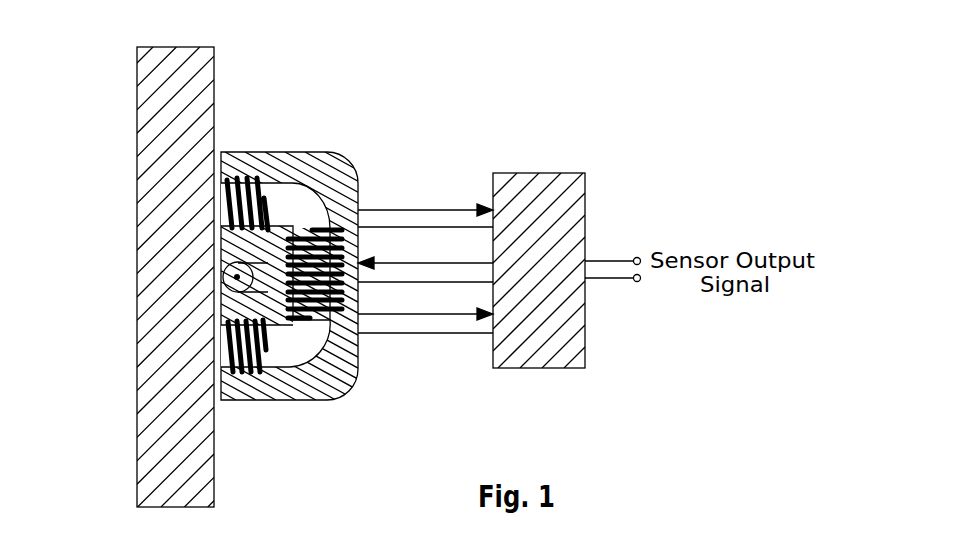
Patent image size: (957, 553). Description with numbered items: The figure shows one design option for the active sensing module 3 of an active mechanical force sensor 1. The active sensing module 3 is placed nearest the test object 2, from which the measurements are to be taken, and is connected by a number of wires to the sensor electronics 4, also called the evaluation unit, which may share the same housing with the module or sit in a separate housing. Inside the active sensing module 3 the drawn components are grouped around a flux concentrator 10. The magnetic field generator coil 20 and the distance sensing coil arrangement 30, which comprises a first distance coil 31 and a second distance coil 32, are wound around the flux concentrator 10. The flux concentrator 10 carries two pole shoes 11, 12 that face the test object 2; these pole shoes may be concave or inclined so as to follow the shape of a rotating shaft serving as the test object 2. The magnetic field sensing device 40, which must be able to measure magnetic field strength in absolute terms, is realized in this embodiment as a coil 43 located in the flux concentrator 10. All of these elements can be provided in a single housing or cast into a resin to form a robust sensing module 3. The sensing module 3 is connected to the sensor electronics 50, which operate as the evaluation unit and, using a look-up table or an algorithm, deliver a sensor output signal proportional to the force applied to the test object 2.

The active mechanical force sensor 1 is at (478, 85).
The test object 2 is at (160, 153).
The active sensing module 3 is at (403, 50).
The sensor electronics 4 is at (603, 160).
The flux concentrator 10 is at (351, 166).
The pole shoe 11 is at (293, 154).
The pole shoe 12 is at (302, 395).
The magnetic field generator coil 20 is at (336, 284).
The distance sensing coil arrangement 30 is at (302, 274).
The first distance coil 31 is at (305, 206).
The second distance coil 32 is at (278, 358).
The magnetic field sensing device 40 is at (164, 270).
The coil 43 is at (226, 264).
The sensor electronics 50 is at (570, 230).